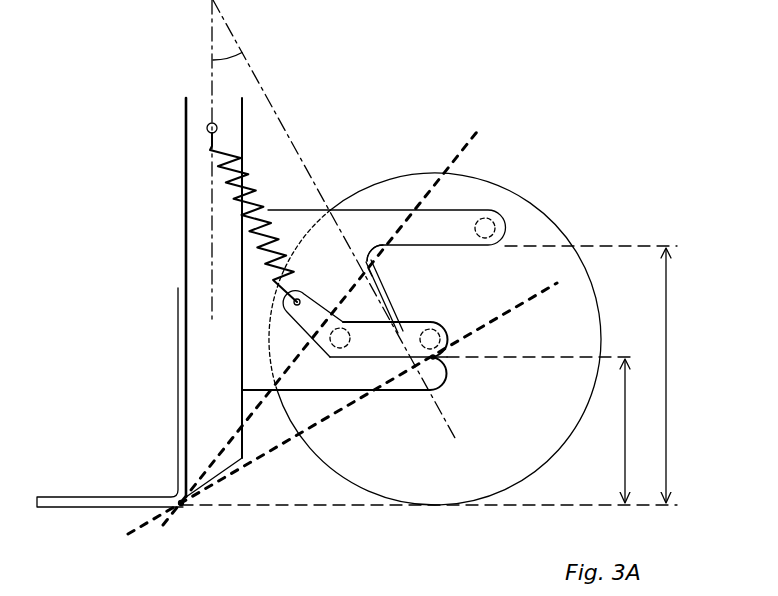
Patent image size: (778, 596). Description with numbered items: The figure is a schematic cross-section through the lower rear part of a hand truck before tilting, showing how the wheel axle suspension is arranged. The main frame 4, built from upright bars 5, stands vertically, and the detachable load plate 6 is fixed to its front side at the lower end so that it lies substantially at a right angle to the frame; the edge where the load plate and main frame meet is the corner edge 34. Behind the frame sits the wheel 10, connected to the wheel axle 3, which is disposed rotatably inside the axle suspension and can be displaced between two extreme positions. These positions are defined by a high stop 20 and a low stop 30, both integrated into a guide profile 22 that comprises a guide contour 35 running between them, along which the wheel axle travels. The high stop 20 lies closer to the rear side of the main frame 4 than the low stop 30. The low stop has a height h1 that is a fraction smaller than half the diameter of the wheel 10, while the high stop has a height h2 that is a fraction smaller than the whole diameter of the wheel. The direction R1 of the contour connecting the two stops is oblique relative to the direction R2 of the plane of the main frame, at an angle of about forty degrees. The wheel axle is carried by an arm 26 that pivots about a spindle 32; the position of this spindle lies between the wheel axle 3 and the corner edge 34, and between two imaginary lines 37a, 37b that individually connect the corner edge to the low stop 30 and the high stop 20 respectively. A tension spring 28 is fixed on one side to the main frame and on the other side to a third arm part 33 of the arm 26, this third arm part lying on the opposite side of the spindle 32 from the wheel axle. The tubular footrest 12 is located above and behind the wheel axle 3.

The wheel axle 3 is at (447, 347).
The main frame 4 is at (139, 302).
The upright bar 5 is at (188, 197).
The load plate 6 is at (118, 495).
The wheel 10 is at (412, 483).
The footrest 12 is at (495, 228).
The high stop 20 is at (375, 240).
The guide profile 22 is at (387, 288).
The arm 26 is at (380, 340).
The tension spring 28 is at (242, 178).
The low stop 30 is at (431, 362).
The spindle 32 is at (335, 355).
The third arm part 33 is at (310, 320).
The corner edge 34 is at (183, 507).
The guide contour 35 is at (383, 282).
The imaginary line 37a is at (528, 298).
The imaginary line 37b is at (452, 153).
The direction of the contour R1 is at (260, 77).
The direction of the plane of the main frame R2 is at (212, 78).
The height of the low stop h1 is at (542, 429).
The height of the high stop h2 is at (430, 375).